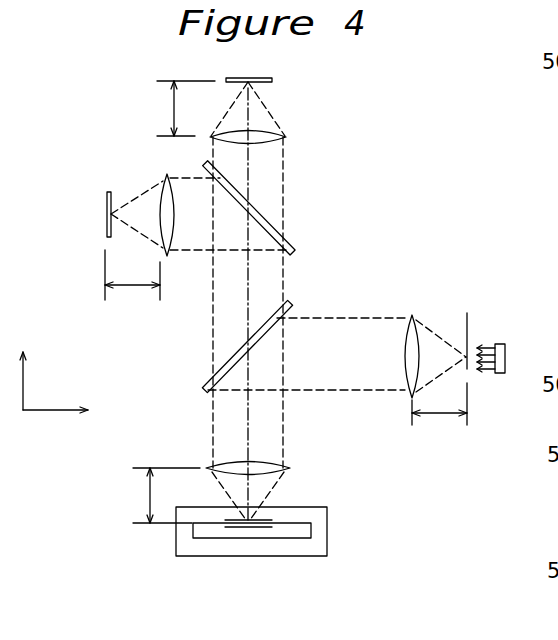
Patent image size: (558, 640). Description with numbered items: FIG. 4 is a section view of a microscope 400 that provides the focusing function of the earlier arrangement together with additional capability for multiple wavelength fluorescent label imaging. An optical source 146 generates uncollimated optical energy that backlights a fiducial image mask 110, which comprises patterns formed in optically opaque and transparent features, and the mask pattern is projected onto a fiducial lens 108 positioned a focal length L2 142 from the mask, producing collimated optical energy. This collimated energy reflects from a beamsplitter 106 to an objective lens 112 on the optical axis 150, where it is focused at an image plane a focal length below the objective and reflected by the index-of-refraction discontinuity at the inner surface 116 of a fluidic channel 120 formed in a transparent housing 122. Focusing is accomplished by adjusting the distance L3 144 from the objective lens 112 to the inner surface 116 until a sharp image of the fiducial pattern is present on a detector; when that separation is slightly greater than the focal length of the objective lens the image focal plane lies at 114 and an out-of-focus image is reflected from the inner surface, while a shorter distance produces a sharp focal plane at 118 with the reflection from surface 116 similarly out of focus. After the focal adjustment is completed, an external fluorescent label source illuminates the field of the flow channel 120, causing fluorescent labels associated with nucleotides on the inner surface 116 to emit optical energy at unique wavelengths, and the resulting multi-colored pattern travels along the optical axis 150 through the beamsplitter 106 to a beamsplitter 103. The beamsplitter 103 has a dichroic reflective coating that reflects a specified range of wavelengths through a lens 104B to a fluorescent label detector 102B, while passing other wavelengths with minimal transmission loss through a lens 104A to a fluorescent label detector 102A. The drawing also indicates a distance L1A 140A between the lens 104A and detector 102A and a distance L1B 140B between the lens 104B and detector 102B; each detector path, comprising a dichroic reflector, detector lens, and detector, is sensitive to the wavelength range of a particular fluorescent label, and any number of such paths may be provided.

The optical system 400 is at (145, 65).
The fluorescent label detector 102A is at (272, 80).
The lens 104A is at (286, 137).
The distance L1A 140A is at (162, 108).
The fluorescent label detector 102B is at (108, 192).
The lens 104B is at (166, 174).
The distance L1B 140B is at (131, 295).
The beamsplitter 103 is at (293, 251).
The optical axis 150 is at (252, 164).
The beamsplitter 106 is at (291, 302).
The fiducial lens 108 is at (412, 316).
The fiducial image mask 110 is at (467, 314).
The optical source 146 is at (499, 344).
The focal length L2 142 is at (439, 422).
The objective lens 112 is at (290, 468).
The focal length L3 144 is at (148, 495).
The image focal plane 114 is at (255, 518).
The inner surface 116 is at (275, 527).
The sharp focal plane 118 is at (280, 533).
The fluidic channel 120 is at (215, 533).
The transparent housing 122 is at (271, 547).